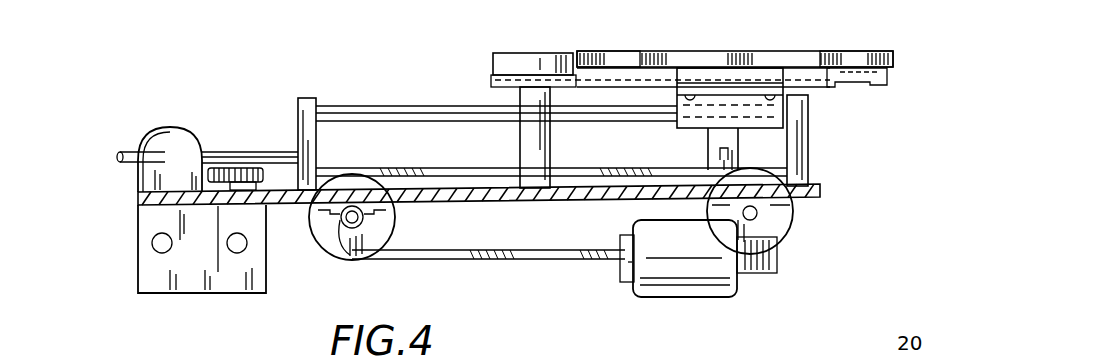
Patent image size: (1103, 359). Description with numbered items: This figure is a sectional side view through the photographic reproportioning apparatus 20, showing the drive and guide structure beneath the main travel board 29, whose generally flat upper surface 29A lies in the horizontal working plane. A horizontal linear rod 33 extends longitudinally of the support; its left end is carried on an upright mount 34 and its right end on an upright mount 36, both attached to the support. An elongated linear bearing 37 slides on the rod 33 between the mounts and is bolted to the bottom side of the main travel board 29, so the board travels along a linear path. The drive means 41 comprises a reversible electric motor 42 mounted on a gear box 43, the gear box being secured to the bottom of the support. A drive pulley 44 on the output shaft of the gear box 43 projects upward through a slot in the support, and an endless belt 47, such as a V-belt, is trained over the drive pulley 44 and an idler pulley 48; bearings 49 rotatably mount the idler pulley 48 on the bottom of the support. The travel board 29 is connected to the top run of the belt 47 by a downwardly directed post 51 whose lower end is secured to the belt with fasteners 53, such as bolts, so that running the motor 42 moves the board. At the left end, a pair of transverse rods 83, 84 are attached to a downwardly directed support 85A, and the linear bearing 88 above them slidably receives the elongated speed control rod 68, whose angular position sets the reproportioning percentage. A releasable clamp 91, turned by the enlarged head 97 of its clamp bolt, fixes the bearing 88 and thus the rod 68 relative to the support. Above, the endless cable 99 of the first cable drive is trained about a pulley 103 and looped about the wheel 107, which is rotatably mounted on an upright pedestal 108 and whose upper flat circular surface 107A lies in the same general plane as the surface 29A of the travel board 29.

The photographic reproportioning apparatus 20 is at (890, 40).
The main travel board 29 is at (705, 57).
The upper surface of main travel board 29A is at (760, 53).
The linear rod 33 is at (408, 113).
The upright mount 34 is at (303, 97).
The upright mount 36 is at (808, 152).
The linear bearing 37 is at (675, 125).
The drive means 41 is at (598, 293).
The reversible electric motor 42 is at (688, 285).
The gear box 43 is at (760, 263).
The drive pulley 44 is at (783, 230).
The endless belt 47 is at (473, 260).
The idler pulley 48 is at (378, 230).
The bearings 49 is at (320, 240).
The post 51 is at (720, 137).
The fasteners 53 is at (742, 148).
The speed control rod 68 is at (120, 148).
The transverse rod 83 is at (150, 247).
The transverse rod 84 is at (246, 250).
The downwardly directed support 85A is at (160, 275).
The linear bearing 88 is at (165, 128).
The releasable clamp 91 is at (216, 140).
The enlarged head 97 is at (240, 167).
The endless cable 99 is at (625, 53).
The pulley 103 is at (877, 83).
The wheel 107 is at (547, 60).
The upper flat circular surface 107A is at (508, 53).
The upright pedestal 108 is at (530, 137).